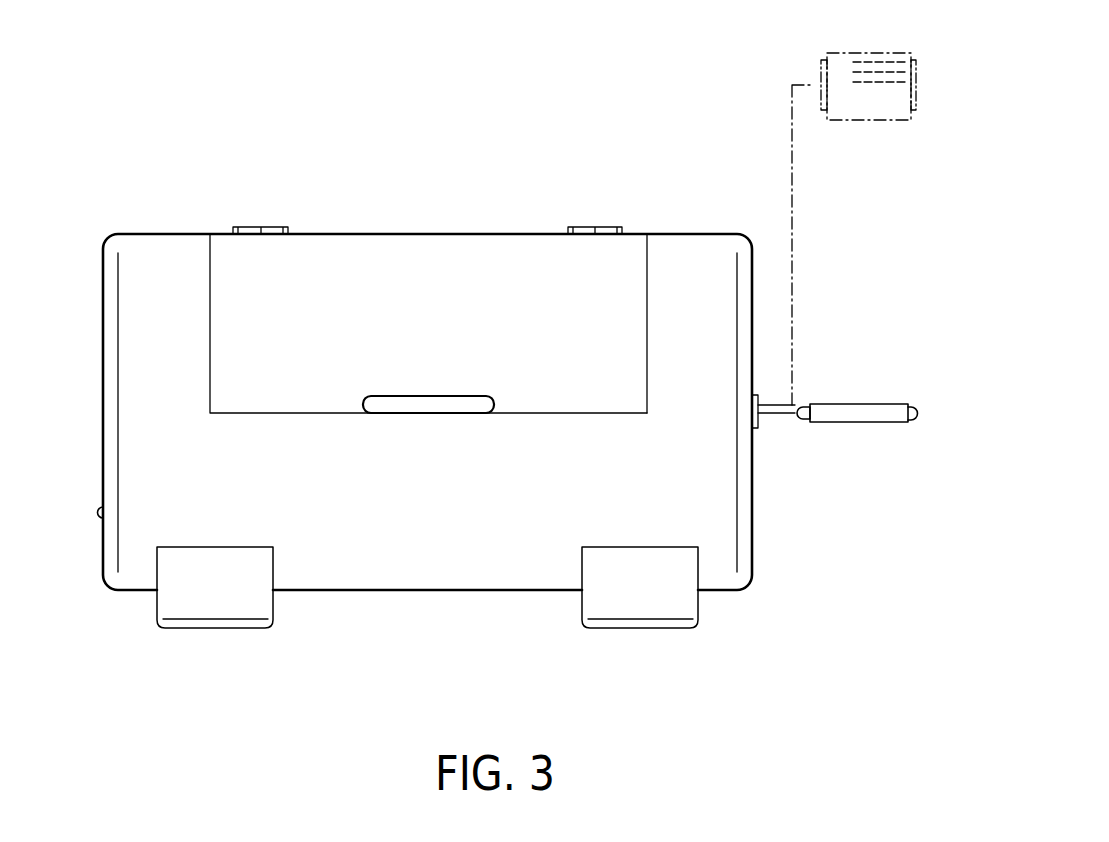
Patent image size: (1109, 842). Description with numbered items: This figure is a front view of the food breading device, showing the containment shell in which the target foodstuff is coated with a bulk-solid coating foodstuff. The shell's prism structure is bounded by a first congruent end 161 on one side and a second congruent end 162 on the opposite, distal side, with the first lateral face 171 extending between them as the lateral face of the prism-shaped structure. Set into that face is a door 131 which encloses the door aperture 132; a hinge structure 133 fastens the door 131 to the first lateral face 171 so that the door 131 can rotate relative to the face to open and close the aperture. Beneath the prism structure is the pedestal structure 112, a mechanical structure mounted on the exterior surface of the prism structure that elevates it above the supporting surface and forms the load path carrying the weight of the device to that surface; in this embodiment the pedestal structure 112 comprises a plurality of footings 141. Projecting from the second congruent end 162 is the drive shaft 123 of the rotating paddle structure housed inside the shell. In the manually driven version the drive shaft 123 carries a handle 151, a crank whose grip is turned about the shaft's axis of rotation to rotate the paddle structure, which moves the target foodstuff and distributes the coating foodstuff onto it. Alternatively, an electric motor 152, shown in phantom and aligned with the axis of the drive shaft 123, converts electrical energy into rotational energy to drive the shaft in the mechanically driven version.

The pedestal structure 112 is at (582, 602).
The drive shaft 123 is at (772, 413).
The door 131 is at (580, 372).
The door aperture 132 is at (647, 300).
The hinge structure 133 is at (605, 228).
The footings 141 is at (233, 600).
The handle 151 is at (867, 418).
The electric motor 152 is at (863, 103).
The first congruent end 161 is at (103, 387).
The second congruent end 162 is at (753, 541).
The first lateral face 171 is at (135, 293).